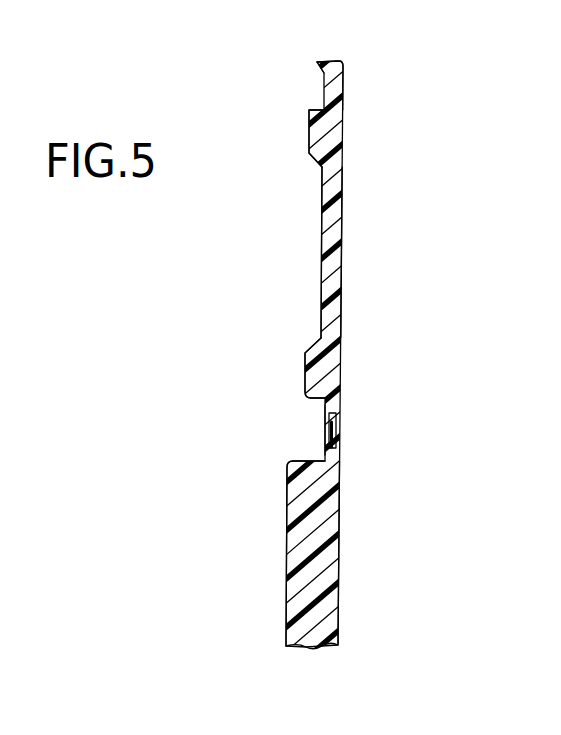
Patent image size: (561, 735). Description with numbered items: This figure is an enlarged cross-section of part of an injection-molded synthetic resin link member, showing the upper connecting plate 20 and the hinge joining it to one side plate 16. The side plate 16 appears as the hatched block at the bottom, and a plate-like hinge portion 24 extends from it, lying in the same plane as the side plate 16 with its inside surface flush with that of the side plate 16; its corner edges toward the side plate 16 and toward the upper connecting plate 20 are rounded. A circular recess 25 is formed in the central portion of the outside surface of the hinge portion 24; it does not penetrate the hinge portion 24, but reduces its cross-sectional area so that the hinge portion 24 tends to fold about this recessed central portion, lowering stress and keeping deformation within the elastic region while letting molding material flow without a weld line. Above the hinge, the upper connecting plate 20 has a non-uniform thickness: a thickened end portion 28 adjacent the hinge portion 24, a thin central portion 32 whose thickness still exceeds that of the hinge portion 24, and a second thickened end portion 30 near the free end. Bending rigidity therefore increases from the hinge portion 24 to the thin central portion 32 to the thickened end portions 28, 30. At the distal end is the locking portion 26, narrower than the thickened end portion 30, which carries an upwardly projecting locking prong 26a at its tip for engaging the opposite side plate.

The side plate 16 is at (295, 558).
The upper connecting plate 20 is at (368, 262).
The hinge portion 24 is at (340, 423).
The circular recess 25 is at (326, 434).
The locking portion 26 is at (343, 61).
The locking prong 26a is at (318, 62).
The thickened end portion 28 is at (307, 378).
The thickened end portion 30 is at (308, 138).
The thin central portion 32 is at (321, 210).